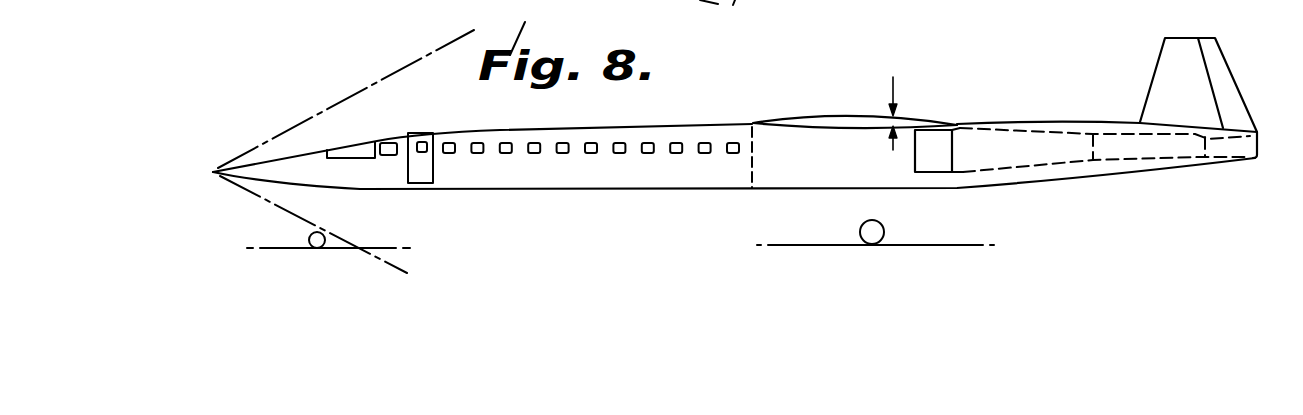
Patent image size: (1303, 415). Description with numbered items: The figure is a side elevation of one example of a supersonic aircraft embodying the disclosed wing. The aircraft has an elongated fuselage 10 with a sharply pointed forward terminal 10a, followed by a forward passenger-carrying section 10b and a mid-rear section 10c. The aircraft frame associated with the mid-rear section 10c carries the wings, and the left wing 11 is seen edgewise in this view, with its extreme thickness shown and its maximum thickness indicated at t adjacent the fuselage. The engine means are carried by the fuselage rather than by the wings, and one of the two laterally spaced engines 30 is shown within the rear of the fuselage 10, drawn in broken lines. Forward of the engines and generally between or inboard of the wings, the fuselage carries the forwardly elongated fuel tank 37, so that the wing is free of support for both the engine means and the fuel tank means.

The fuselage 10 is at (518, 195).
The sharply pointed forward terminal 10a is at (213, 172).
The forward passenger-carrying section 10b is at (571, 173).
The mid-rear section 10c is at (800, 189).
The left wing 11 is at (840, 115).
The maximum wing thickness t is at (901, 104).
The fuel tank 37 is at (928, 190).
The engine 30 is at (1142, 152).